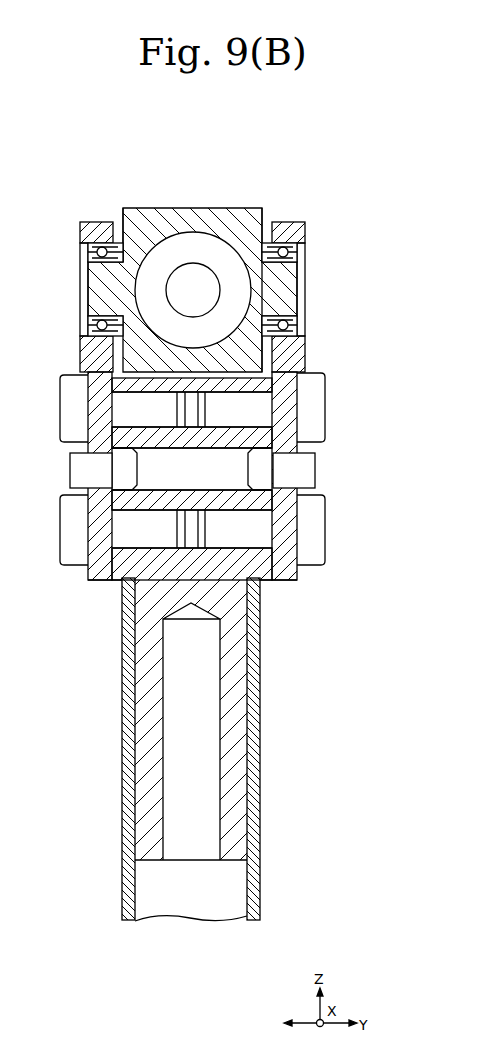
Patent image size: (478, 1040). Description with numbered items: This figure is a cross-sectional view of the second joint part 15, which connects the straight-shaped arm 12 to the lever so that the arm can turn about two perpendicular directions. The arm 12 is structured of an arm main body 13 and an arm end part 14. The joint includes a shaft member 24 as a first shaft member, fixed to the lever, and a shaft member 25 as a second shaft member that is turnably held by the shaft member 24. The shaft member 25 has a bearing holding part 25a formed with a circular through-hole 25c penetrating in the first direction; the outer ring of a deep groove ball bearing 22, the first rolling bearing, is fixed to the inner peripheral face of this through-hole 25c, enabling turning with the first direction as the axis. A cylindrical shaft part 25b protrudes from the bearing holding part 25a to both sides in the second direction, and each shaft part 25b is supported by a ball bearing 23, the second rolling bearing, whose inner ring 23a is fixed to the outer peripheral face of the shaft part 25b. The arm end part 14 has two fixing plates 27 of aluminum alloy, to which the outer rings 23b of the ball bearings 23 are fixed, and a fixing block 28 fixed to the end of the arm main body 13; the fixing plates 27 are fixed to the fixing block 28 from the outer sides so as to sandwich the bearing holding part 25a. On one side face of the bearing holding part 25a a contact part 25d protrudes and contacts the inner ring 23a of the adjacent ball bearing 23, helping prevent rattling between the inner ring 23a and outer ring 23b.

The second joint part 15 is at (197, 237).
The arm 12 is at (232, 750).
The arm main body 13 is at (260, 885).
The arm end part 14 is at (226, 749).
The fixing block 28 is at (260, 717).
The ball bearing 22 is at (225, 240).
The ball bearing 23 is at (197, 282).
The inner ring 23a is at (80, 255).
The outer ring 23b is at (305, 247).
The shaft member 24 is at (194, 262).
The shaft member 25 is at (192, 255).
The bearing holding part 25a is at (178, 208).
The shaft part 25b is at (88, 327).
The through-hole 25c is at (245, 290).
The contact part 25d is at (100, 268).
The fixing plate 27 is at (90, 582).